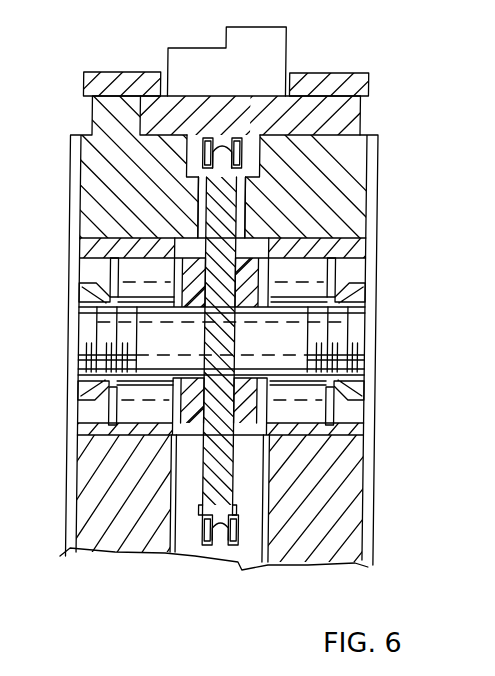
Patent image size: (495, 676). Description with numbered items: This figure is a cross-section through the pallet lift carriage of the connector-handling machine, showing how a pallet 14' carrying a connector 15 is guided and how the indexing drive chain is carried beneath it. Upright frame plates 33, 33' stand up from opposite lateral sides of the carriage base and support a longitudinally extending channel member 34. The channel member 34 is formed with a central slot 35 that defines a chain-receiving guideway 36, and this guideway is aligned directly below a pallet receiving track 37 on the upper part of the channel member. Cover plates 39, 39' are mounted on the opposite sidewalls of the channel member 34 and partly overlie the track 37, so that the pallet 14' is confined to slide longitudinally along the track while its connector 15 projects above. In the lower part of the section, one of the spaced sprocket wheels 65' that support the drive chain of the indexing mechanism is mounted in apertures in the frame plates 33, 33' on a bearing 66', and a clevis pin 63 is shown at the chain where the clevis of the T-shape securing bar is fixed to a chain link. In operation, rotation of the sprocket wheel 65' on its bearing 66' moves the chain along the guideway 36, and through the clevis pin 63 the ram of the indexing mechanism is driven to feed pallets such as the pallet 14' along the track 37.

The pallet 14' is at (220, 293).
The connector 15 is at (273, 43).
The upright frame plate 33 is at (280, 500).
The upright frame plate 33' is at (122, 497).
The channel member 34 is at (100, 222).
The central slot 35 is at (198, 196).
The chain-receiving guideway 36 is at (252, 152).
The pallet receiving track 37 is at (310, 132).
The cover plate 39 is at (330, 80).
The cover plate 39' is at (110, 64).
The clevis pin 63 is at (240, 545).
The sprocket wheel 65' is at (247, 346).
The bearing 66' is at (245, 336).